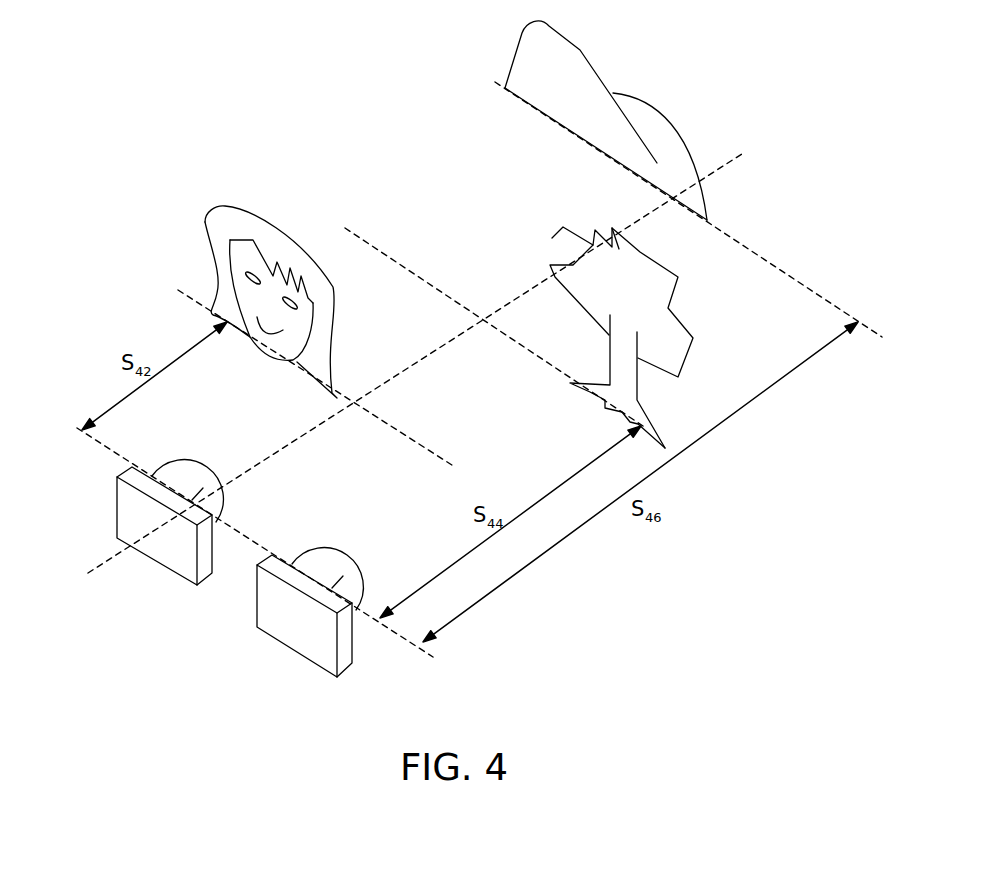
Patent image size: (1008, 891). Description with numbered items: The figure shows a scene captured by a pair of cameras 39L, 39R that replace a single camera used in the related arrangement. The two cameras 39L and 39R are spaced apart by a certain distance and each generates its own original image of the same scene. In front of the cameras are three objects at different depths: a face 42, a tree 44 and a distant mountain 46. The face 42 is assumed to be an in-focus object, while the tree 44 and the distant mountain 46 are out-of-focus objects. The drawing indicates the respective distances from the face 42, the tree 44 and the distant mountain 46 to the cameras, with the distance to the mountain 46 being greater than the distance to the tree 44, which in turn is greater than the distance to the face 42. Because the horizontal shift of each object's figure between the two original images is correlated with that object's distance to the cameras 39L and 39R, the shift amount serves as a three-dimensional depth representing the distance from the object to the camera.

The camera 39L is at (115, 513).
The camera 39R is at (274, 640).
The face 42 is at (205, 222).
The tree 44 is at (552, 238).
The distant mountain 46 is at (510, 67).